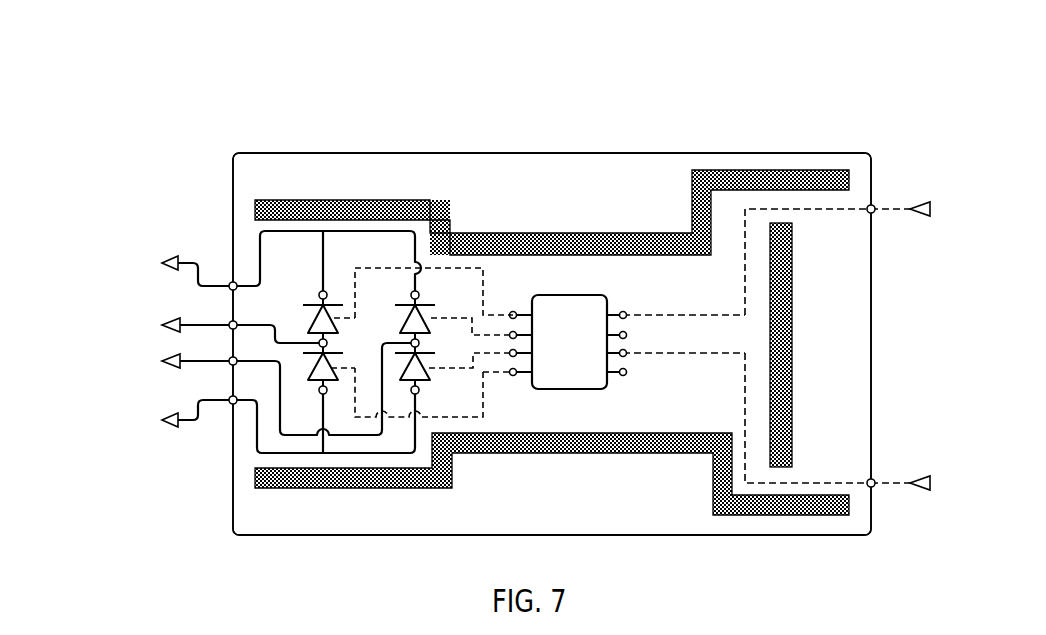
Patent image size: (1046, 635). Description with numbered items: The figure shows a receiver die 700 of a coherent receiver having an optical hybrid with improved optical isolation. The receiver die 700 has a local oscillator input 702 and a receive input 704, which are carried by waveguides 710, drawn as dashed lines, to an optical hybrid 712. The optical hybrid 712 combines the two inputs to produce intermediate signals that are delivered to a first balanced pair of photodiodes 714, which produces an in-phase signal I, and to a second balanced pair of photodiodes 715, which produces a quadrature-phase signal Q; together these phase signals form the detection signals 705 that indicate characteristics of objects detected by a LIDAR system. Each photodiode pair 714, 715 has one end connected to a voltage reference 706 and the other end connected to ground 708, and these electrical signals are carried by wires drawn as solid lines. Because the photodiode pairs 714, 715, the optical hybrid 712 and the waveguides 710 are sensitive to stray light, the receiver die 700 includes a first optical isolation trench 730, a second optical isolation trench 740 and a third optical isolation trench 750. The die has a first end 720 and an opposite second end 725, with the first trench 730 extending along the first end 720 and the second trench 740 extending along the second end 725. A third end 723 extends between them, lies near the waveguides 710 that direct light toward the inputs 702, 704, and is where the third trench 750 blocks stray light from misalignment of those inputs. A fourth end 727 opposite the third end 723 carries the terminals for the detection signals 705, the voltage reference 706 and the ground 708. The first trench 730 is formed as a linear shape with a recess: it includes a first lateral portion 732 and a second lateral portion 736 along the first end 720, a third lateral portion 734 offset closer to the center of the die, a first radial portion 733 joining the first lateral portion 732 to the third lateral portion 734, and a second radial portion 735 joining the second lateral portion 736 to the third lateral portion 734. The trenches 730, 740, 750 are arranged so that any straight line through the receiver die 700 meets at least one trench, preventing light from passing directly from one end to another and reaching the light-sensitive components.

The receiver die 700 is at (150, 102).
The local oscillator (LO) input 702 is at (930, 192).
The receive (Rx) input 704 is at (933, 463).
The detection signals 705 is at (120, 327).
The voltage reference 706 is at (133, 242).
The ground 708 is at (108, 425).
The waveguides 710 is at (677, 307).
The optical hybrid 712 is at (583, 287).
The first balanced pair of photodiodes 714 is at (290, 285).
The second balanced pair of photodiodes 715 is at (387, 313).
The first end 720 is at (563, 115).
The third end 723 is at (890, 350).
The second end 725 is at (450, 553).
The fourth end 727 is at (70, 307).
The first optical isolation trench 730 is at (255, 185).
The first lateral portion 732 is at (395, 200).
The first radial portion 733 is at (450, 217).
The third lateral portion 734 is at (600, 233).
The second radial portion 735 is at (692, 192).
The second lateral portion 736 is at (727, 170).
The second optical isolation trench 740 is at (418, 497).
The third optical isolation trench 750 is at (797, 288).